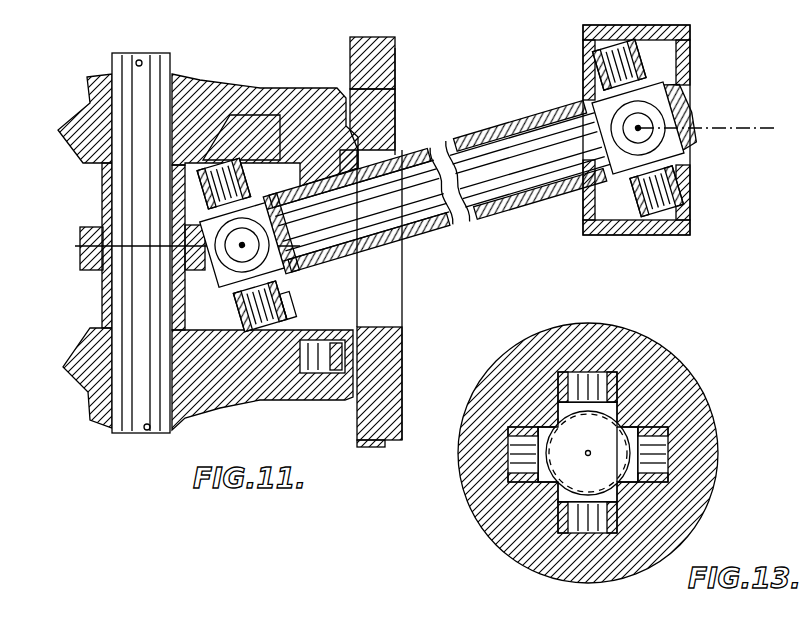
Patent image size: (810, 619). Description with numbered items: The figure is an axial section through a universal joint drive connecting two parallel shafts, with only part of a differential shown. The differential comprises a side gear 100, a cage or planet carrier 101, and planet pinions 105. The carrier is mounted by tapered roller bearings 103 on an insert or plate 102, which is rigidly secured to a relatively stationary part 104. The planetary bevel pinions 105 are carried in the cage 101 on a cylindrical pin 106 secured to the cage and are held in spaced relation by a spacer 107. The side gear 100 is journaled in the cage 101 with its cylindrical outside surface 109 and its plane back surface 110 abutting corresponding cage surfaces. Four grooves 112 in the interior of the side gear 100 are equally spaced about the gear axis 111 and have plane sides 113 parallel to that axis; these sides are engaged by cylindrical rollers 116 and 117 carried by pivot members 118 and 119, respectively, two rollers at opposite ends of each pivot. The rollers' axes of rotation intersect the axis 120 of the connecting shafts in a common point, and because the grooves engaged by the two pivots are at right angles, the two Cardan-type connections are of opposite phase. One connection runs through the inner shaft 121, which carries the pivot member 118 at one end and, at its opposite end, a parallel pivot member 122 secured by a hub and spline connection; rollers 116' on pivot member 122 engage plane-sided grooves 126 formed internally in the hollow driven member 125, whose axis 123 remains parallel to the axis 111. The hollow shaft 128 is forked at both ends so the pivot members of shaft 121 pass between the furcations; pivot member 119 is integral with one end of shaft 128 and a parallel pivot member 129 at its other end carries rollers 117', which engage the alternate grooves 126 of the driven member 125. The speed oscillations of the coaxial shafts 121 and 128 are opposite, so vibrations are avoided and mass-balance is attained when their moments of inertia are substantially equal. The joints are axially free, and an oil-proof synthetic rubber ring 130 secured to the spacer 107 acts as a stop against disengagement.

In FIG. 11, the side gear 100 is at (257, 120).
In FIG. 11, the cage or planet carrier 101 is at (207, 85).
In FIG. 11, the insert or plate 102 is at (388, 103).
In FIG. 11, the tapered roller bearings 103 is at (358, 160).
In FIG. 11, the relatively stationary part 104 is at (372, 41).
In FIG. 11, the planet pinions 105 is at (78, 142).
In FIG. 11, the cylindrical pin 106 is at (132, 196).
In FIG. 11, the spacer 107 is at (112, 297).
In FIG. 11, the cylindrical outside surface 109 is at (270, 378).
In FIG. 11, the plane back surface 110 is at (325, 372).
In FIG. 11, the gear axis 111 is at (75, 246).
In FIG. 11, the grooves 112 is at (283, 215).
In FIG. 13, the plane sides 113 is at (508, 464).
In FIG. 11, the cylindrical rollers 116 is at (253, 245).
In FIG. 13, the cylindrical rollers 116 is at (700, 452).
In FIG. 11, the cylindrical rollers 116' is at (666, 128).
In FIG. 11, the cylindrical rollers 117 is at (273, 245).
In FIG. 13, the cylindrical rollers 117 is at (580, 450).
In FIG. 11, the rollers 117' is at (685, 193).
In FIG. 11, the pivot member 118 is at (270, 254).
In FIG. 13, the pivot member 118 is at (633, 472).
In FIG. 11, the pivot member 119 is at (290, 312).
In FIG. 13, the pivot member 119 is at (556, 412).
In FIG. 11, the axis 120 is at (387, 204).
In FIG. 13, the axis 120 is at (590, 453).
In FIG. 11, the inner shaft 121 is at (533, 137).
In FIG. 11, the pivot member 122 is at (617, 137).
In FIG. 11, the axis 123 is at (722, 128).
In FIG. 11, the driven member or shaft 125 is at (672, 31).
In FIG. 11, the grooves 126 is at (663, 57).
In FIG. 11, the shaft 128 is at (492, 128).
In FIG. 13, the shaft 128 is at (558, 425).
In FIG. 11, the pivot member 129 is at (597, 58).
In FIG. 11, the oil-proof synthetic rubber ring 130 is at (84, 262).